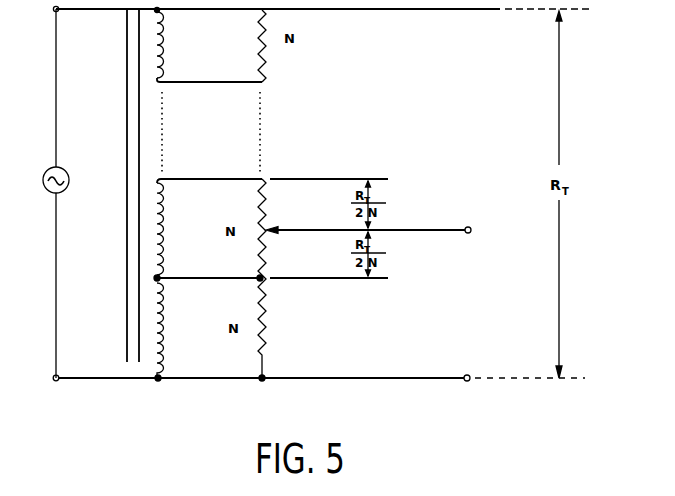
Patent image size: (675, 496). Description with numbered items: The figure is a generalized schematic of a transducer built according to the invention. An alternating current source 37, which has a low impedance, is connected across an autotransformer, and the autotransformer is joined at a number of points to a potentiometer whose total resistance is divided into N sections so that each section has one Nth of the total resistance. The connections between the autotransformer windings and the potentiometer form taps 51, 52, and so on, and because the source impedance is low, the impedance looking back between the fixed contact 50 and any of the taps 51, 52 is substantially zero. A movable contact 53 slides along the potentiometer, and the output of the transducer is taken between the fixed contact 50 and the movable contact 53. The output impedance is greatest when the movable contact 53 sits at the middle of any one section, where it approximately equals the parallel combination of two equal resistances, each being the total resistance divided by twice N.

The alternating current source 37 is at (67, 167).
The fixed contact 50 is at (463, 382).
The tap 51 is at (264, 282).
The tap 52 is at (262, 177).
The movable contact 53 is at (471, 227).